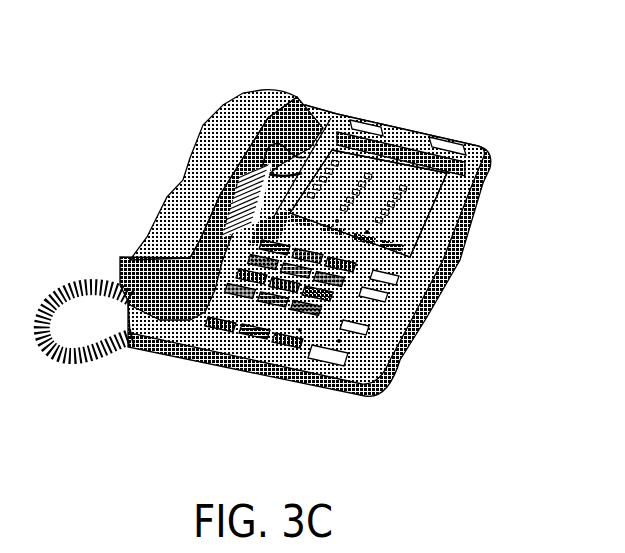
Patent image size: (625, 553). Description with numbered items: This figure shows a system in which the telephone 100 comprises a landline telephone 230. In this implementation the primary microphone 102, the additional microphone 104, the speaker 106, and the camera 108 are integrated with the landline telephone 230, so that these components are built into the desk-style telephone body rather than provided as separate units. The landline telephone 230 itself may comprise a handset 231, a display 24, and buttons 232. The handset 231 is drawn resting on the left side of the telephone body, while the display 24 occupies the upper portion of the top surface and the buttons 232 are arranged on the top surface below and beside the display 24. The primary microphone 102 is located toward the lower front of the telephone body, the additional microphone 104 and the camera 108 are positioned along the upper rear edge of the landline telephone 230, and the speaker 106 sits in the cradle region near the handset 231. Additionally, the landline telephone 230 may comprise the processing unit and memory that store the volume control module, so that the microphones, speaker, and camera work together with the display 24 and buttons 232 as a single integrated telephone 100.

The telephone 100 is at (289, 232).
The primary microphone 102 is at (305, 357).
The additional microphone 104 is at (370, 120).
The speaker 106 is at (237, 210).
The camera 108 is at (465, 145).
The display 24 is at (427, 212).
The landline telephone 230 is at (408, 135).
The handset 231 is at (168, 202).
The buttons 232 is at (356, 303).